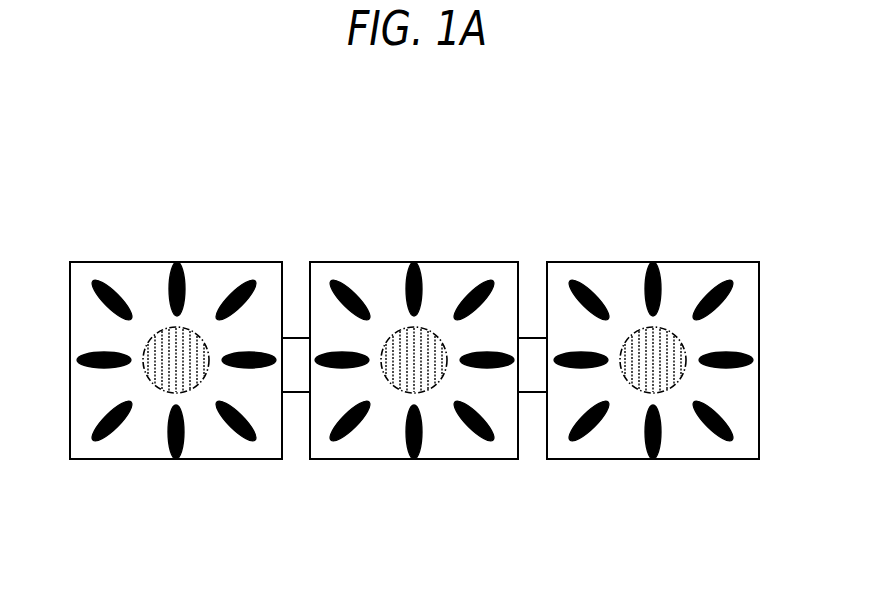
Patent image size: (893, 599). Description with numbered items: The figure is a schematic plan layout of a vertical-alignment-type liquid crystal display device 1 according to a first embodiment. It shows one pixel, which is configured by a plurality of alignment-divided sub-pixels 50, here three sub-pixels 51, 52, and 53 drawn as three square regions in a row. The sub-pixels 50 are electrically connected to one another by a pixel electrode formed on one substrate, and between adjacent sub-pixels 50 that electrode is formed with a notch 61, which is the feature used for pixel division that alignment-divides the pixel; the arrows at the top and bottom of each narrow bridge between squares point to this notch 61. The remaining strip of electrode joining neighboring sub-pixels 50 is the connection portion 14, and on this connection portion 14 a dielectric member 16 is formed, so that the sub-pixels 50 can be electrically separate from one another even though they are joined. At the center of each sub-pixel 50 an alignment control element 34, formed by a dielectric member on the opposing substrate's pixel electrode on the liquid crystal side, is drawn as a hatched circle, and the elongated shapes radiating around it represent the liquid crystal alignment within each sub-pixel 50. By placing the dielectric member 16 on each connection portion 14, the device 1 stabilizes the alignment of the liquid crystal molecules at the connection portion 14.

The liquid crystal display device 1 is at (730, 190).
The sub-pixel 50 is at (414, 296).
The sub-pixel 51 is at (83, 277).
The sub-pixel 52 is at (327, 277).
The sub-pixel 53 is at (565, 277).
The alignment control element 34 is at (175, 368).
The notch 61 is at (294, 296).
The connection portion 14 is at (304, 360).
The dielectric member 16 is at (293, 363).